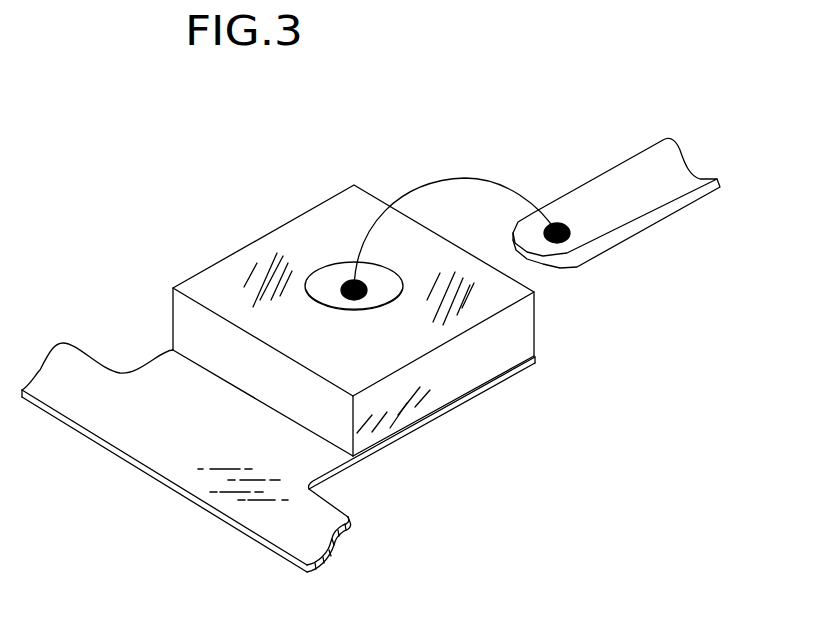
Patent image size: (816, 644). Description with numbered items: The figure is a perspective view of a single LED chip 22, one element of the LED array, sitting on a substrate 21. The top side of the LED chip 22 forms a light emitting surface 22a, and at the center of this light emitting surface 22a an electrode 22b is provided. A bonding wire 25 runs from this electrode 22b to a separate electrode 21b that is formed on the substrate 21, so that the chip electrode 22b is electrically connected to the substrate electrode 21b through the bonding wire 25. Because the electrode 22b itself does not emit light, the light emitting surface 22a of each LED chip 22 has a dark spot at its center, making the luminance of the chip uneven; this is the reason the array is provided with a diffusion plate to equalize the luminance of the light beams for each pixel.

The substrate 21 is at (196, 447).
The electrode 21b is at (645, 182).
The LED chip 22 is at (465, 394).
The light emitting surface 22a is at (237, 278).
The electrode 22b is at (333, 272).
The bonding wire 25 is at (465, 178).